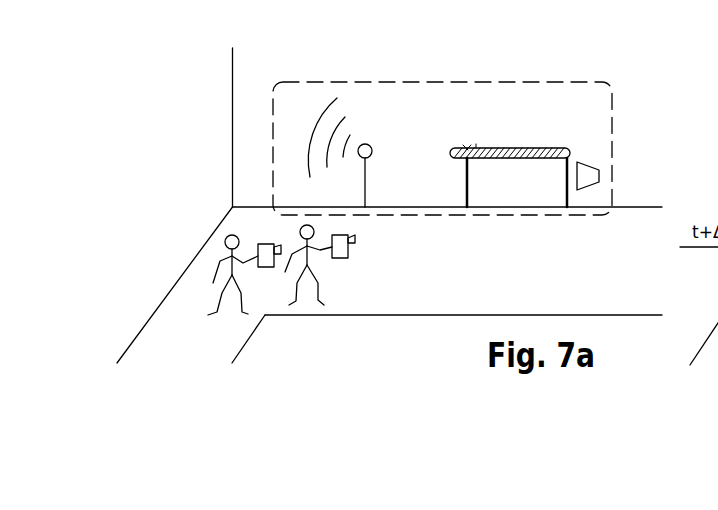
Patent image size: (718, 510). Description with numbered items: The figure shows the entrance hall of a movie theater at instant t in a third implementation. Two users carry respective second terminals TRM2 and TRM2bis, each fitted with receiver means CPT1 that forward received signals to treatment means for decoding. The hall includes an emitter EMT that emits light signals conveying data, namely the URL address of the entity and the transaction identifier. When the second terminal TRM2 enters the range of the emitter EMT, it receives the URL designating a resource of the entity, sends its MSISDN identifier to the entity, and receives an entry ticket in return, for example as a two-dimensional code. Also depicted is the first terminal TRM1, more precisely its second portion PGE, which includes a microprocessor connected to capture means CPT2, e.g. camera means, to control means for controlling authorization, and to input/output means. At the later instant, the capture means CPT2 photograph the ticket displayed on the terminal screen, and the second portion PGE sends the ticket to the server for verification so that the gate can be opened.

The emitter EMT is at (365, 177).
The second portion PGE is at (503, 150).
The first terminal TRM1 is at (558, 82).
The capture means CPT2 is at (587, 163).
The receiver means CPT1 is at (277, 246).
The second terminal TRM2 is at (340, 258).
The second terminal TRM2bis is at (266, 267).